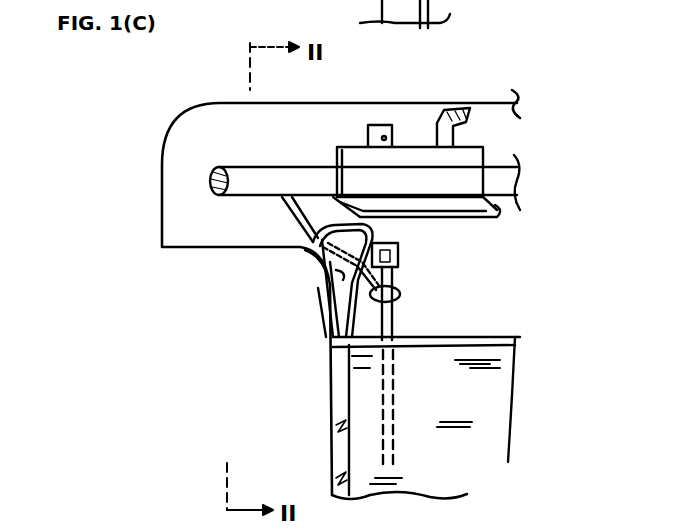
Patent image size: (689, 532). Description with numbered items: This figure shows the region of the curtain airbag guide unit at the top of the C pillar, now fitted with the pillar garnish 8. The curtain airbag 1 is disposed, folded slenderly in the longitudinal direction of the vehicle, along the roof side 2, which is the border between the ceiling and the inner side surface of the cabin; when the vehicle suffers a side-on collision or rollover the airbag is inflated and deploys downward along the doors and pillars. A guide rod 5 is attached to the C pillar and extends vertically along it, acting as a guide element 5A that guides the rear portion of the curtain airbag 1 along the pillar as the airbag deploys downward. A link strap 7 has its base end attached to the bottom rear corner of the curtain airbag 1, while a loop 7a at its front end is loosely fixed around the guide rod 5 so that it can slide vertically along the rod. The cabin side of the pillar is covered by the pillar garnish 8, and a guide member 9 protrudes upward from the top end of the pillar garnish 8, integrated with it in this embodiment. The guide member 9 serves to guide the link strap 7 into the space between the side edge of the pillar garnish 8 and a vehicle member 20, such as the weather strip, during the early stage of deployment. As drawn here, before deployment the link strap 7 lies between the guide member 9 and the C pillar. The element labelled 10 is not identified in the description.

The curtain airbag 1 is at (258, 180).
The roof side 2 is at (200, 143).
The guide rod 5 is at (395, 318).
The guide element 5A is at (404, 308).
The link strap 7 is at (286, 216).
The loop 7a is at (403, 292).
The pillar garnish 8 is at (497, 383).
The guide member 9 is at (320, 290).
The holder 10 is at (497, 220).
The vehicle member 20 is at (317, 272).